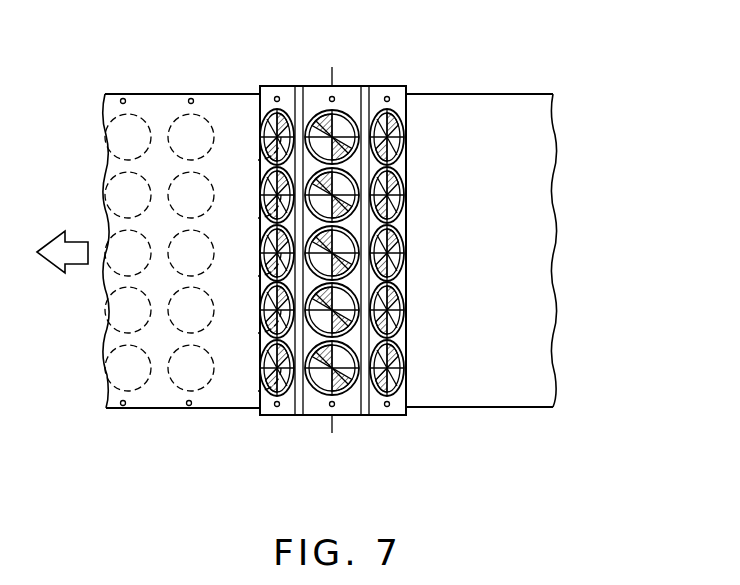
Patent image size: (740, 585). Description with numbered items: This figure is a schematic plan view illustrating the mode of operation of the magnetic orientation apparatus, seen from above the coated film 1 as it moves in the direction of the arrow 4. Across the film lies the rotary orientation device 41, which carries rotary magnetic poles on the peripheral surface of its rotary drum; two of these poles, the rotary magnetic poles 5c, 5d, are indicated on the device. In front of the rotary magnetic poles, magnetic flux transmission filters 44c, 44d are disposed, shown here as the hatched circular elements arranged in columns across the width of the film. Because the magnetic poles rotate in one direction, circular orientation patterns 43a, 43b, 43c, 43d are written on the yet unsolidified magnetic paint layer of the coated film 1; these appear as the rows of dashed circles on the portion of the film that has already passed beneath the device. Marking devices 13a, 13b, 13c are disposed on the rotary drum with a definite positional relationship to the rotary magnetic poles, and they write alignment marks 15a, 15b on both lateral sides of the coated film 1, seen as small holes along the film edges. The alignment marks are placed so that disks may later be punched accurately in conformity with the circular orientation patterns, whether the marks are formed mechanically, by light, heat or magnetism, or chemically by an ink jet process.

The coated film 1 is at (485, 110).
The arrow 4 is at (53, 263).
The rotary magnetic pole 5c is at (376, 415).
The rotary magnetic pole 5d is at (305, 415).
The marking device 13a is at (390, 415).
The marking device 13b is at (329, 415).
The marking device 13c is at (277, 407).
The alignment mark 15a is at (123, 408).
The alignment mark 15b is at (189, 408).
The rotary orientation device 41 is at (319, 98).
The circular orientation pattern 43a is at (118, 367).
The circular orientation pattern 43b is at (118, 310).
The circular orientation pattern 43c is at (117, 247).
The circular orientation pattern 43d is at (117, 188).
The magnetic flux transmission filter 44c is at (403, 408).
The magnetic flux transmission filter 44d is at (344, 402).